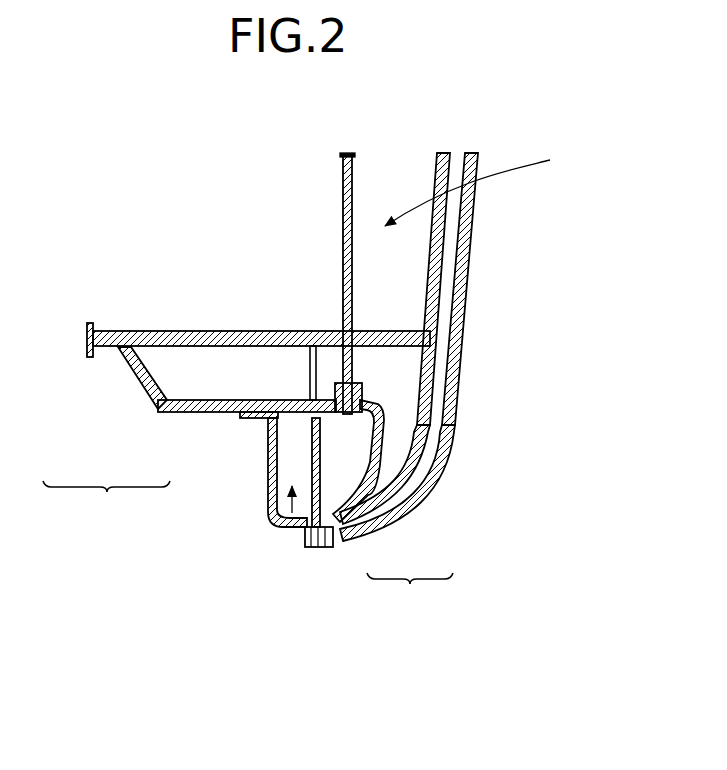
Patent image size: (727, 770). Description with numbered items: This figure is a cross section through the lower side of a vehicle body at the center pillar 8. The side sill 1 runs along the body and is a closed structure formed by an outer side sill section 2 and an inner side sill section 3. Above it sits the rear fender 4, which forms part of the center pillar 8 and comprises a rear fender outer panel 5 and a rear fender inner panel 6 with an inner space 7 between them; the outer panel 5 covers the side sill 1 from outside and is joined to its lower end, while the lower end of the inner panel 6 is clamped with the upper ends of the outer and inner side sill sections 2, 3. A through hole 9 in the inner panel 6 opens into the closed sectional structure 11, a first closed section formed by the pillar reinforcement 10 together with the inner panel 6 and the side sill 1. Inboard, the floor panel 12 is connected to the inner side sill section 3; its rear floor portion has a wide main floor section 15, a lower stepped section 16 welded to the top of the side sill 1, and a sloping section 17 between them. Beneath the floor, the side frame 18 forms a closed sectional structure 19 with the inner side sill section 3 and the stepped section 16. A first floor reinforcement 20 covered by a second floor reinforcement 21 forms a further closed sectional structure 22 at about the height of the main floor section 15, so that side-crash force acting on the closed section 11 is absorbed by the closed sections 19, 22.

The side sill 1 is at (410, 594).
The outer side sill section 2 is at (413, 507).
The inner side sill section 3 is at (363, 520).
The rear fender 4 is at (484, 367).
The center pillar 8 is at (409, 367).
The rear fender outer panel 5 is at (446, 367).
The rear fender inner panel 6 is at (342, 190).
The inner space 7 is at (393, 182).
The through hole 9 is at (342, 316).
The pillar reinforcement 10 is at (453, 228).
The closed sectional structure (first closed section) 11 is at (482, 180).
The floor panel 12 is at (188, 425).
The main floor section 15 is at (95, 355).
The stepped section 16 is at (178, 412).
The sloping section 17 is at (142, 378).
The side frame 18 is at (270, 523).
The closed sectional structure (second closed section) 19 is at (292, 522).
The first floor reinforcement 20 is at (155, 331).
The second floor reinforcement 21 is at (261, 294).
The closed sectional structure (forward third closed section) 22 is at (230, 376).